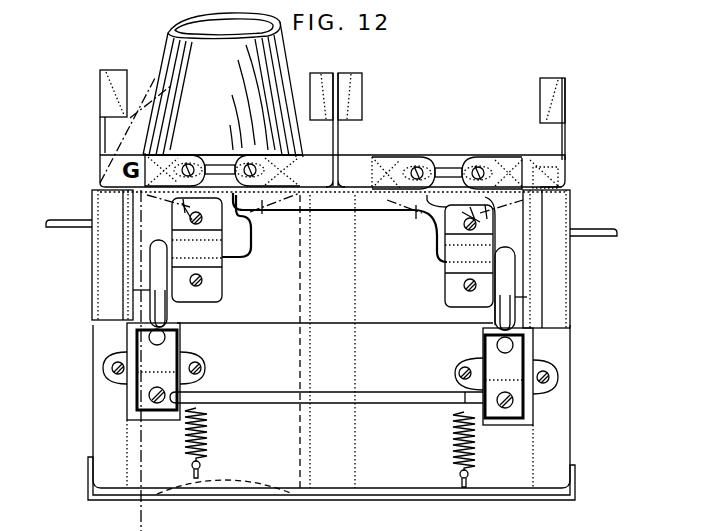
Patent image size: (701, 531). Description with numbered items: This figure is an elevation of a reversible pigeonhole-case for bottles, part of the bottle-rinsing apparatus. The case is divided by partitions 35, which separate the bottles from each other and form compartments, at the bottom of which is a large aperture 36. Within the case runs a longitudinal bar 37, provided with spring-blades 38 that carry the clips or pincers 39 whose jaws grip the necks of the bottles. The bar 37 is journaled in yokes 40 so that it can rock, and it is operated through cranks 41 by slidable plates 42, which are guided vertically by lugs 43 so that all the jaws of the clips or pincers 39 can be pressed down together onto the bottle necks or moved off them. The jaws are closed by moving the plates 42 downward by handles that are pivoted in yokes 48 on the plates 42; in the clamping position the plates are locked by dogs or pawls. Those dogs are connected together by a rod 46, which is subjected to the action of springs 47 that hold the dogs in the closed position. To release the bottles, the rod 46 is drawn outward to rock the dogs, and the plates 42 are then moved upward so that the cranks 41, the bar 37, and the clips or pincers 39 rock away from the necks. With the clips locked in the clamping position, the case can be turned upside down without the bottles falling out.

The partitions 35 is at (346, 452).
The aperture 36 is at (270, 497).
The longitudinal bar 37 is at (568, 171).
The spring-blades 38 is at (340, 142).
The clips or pincers 39 is at (363, 89).
The yokes 40 is at (458, 161).
The cranks 41 is at (382, 164).
The slidable plates 42 is at (395, 323).
The lugs 43 is at (107, 276).
The rod 46 is at (259, 394).
The springs 47 is at (207, 440).
The yokes 48 is at (218, 291).